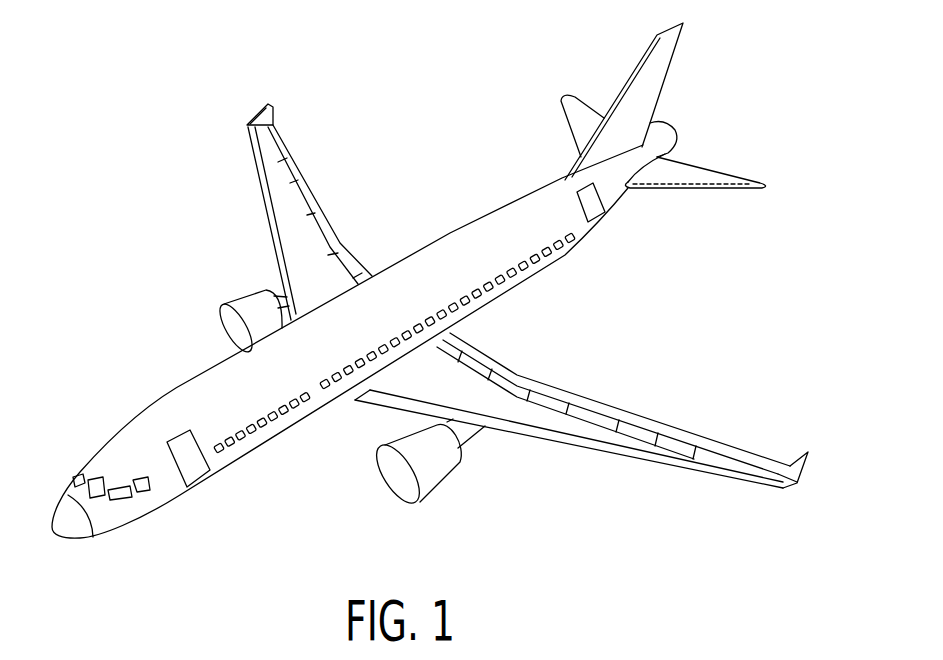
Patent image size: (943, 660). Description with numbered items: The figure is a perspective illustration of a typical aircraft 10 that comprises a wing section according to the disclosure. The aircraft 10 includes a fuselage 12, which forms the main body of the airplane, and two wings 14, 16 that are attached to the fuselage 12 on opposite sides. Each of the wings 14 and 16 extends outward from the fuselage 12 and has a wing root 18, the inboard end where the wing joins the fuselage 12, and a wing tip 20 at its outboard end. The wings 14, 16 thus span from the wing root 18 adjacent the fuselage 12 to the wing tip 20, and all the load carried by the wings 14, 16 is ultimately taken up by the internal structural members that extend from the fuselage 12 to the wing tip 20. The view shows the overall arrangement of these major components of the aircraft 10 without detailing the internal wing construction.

The aircraft 10 is at (133, 238).
The fuselage 12 is at (234, 466).
The wing 14 is at (298, 222).
The wing 16 is at (527, 403).
The wing root 18 is at (329, 430).
The wing tip 20 is at (797, 483).